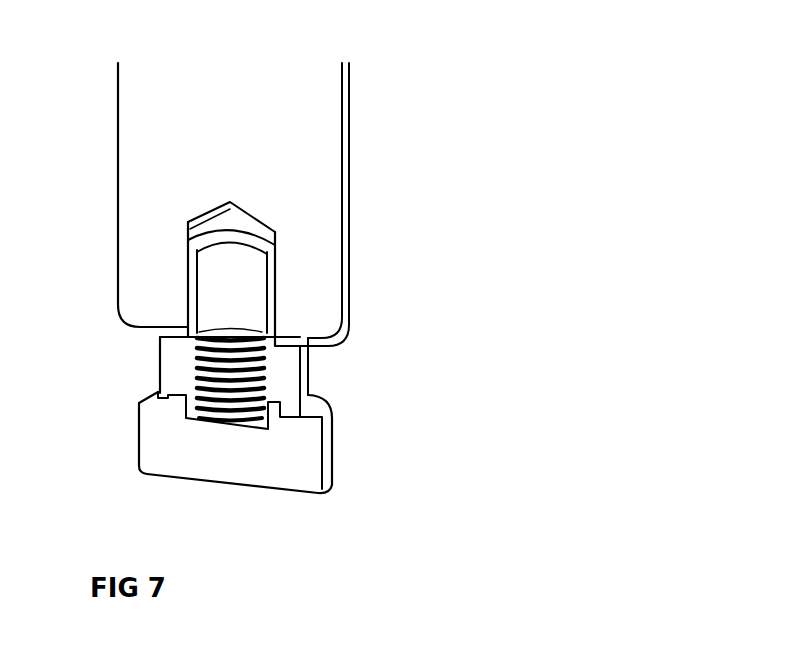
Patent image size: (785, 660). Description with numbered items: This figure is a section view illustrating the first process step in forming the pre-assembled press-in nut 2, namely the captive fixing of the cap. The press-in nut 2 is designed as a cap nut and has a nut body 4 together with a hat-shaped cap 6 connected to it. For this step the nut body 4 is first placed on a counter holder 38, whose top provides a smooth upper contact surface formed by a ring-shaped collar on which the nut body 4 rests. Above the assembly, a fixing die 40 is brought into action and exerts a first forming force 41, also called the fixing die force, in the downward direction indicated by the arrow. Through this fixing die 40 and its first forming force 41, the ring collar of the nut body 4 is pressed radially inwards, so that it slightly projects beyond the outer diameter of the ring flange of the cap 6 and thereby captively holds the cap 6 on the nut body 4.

The press-in nut 2 is at (322, 375).
The nut body 4 is at (172, 365).
The cap 6 is at (188, 295).
The counter holder 38 is at (307, 468).
The fixing die 40 is at (317, 140).
The first forming force 41 is at (421, 133).